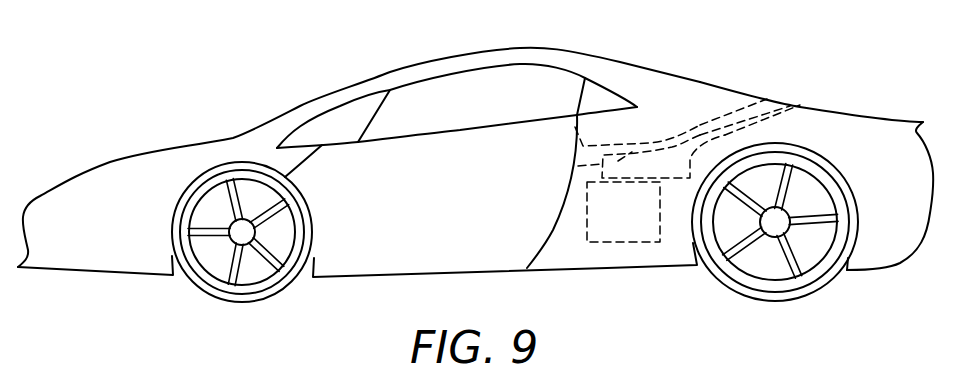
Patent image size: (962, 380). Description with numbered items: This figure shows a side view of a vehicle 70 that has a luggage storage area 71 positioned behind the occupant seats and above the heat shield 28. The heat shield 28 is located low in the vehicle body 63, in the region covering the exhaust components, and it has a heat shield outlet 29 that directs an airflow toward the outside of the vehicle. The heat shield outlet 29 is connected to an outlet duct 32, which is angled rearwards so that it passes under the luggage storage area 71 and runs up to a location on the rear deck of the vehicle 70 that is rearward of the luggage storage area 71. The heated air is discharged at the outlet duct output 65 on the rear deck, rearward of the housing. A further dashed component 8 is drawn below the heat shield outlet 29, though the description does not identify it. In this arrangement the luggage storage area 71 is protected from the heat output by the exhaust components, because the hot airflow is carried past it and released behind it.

The vehicle 70 is at (280, 76).
The luggage storage area 71 is at (659, 117).
The outlet duct 32 is at (724, 135).
The outlet duct output 65 is at (793, 102).
The vehicle body 63 is at (885, 125).
The heat shield 28 is at (572, 168).
The heat shield outlet 29 is at (658, 190).
The battery 8 is at (605, 233).